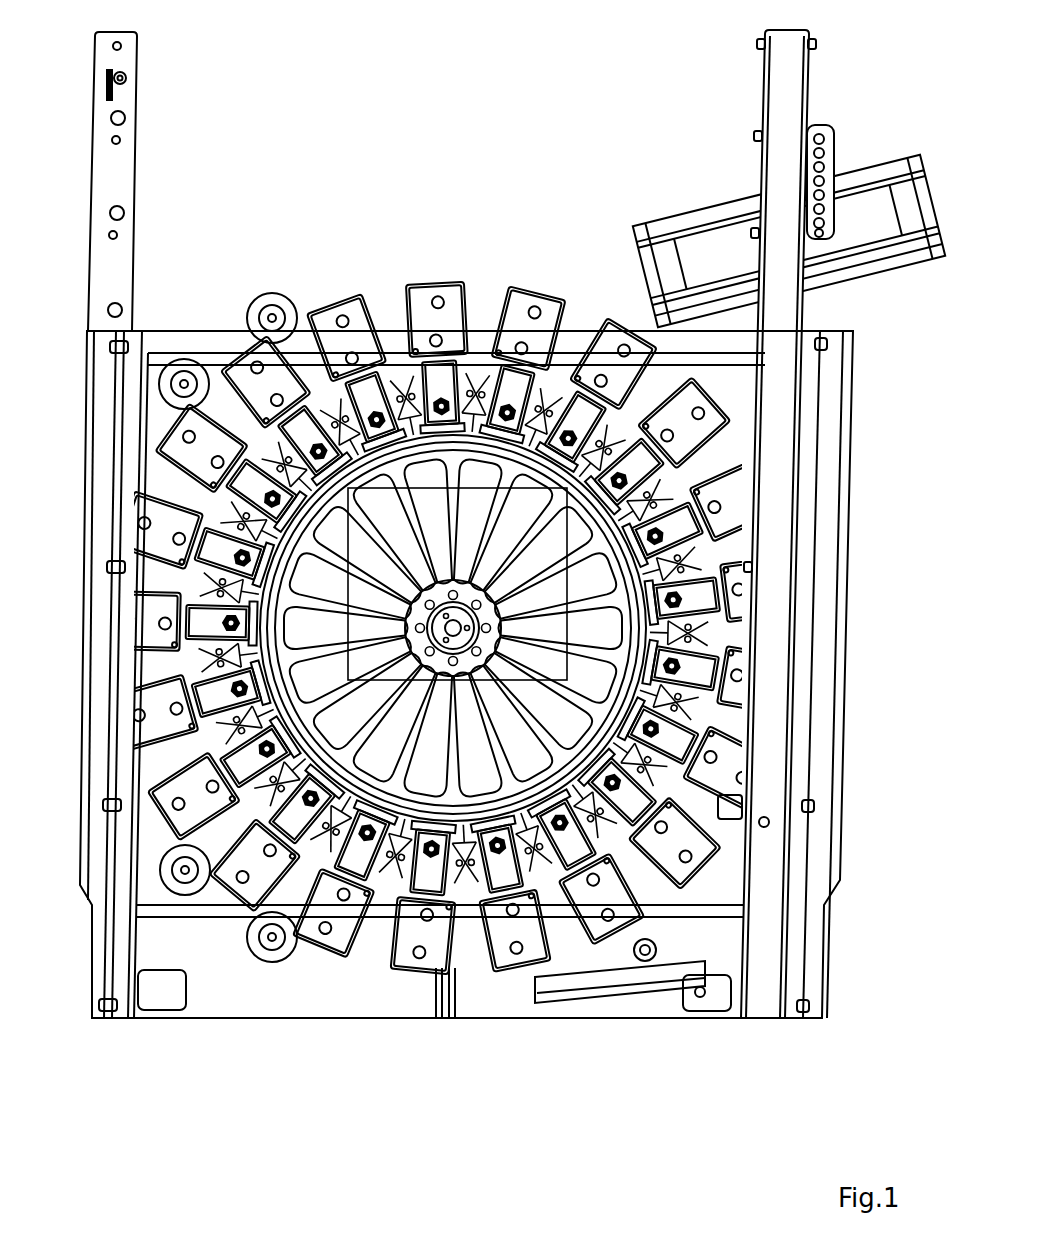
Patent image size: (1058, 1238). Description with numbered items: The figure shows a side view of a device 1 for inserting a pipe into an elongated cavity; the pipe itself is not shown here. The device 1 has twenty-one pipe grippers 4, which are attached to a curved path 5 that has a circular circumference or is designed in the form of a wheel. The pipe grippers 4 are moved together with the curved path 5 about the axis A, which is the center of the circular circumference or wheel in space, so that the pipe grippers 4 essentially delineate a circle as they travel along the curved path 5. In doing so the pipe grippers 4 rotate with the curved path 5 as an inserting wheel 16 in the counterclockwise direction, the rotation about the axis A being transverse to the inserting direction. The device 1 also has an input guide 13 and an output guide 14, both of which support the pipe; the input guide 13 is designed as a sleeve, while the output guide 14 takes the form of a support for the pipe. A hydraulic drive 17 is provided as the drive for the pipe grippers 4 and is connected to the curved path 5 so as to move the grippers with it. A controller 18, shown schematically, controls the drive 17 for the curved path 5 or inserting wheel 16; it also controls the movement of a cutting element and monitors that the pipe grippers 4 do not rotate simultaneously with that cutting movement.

The device 1 is at (378, 280).
The pipe grippers 4 is at (432, 325).
The curved path 5 is at (712, 633).
The input guide 13 is at (880, 190).
The output guide 14 is at (680, 972).
The inserting wheel 16 is at (290, 627).
The hydraulic drive 17 is at (86, 558).
The controller 18 is at (58, 547).
The axis A is at (460, 612).